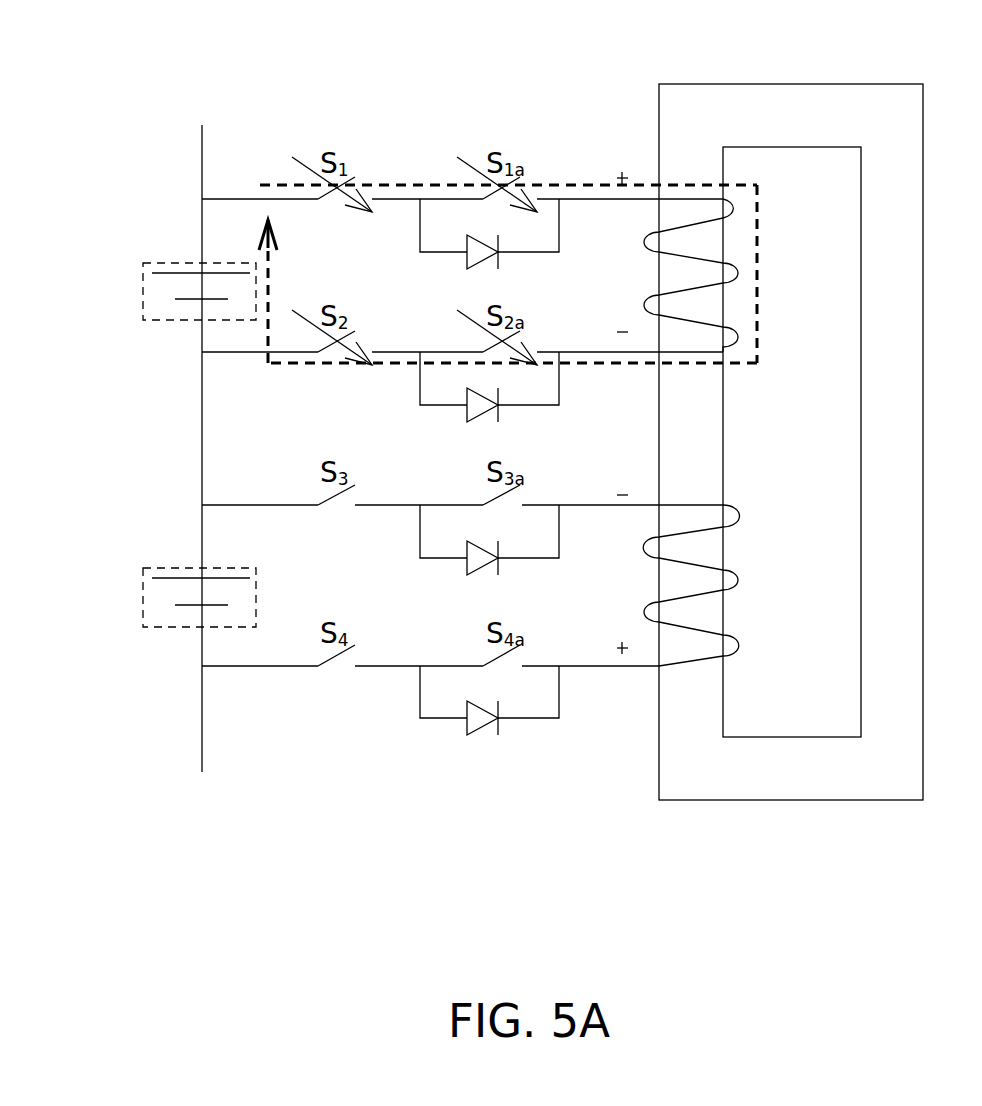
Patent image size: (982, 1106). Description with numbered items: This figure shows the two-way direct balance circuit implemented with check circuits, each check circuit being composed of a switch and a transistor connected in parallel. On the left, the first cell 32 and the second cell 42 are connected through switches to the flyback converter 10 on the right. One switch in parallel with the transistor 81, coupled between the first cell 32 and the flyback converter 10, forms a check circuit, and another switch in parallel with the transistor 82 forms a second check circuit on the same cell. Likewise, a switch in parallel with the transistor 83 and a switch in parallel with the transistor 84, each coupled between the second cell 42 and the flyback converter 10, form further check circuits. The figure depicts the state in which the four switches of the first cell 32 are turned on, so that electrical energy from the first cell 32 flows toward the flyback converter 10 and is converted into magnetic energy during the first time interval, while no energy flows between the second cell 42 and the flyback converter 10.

The flyback converter 10 is at (791, 83).
The first cell 32 is at (142, 282).
The second cell 42 is at (142, 588).
The transistor 81 is at (468, 262).
The transistor 82 is at (468, 413).
The transistor 83 is at (468, 567).
The transistor 84 is at (468, 728).